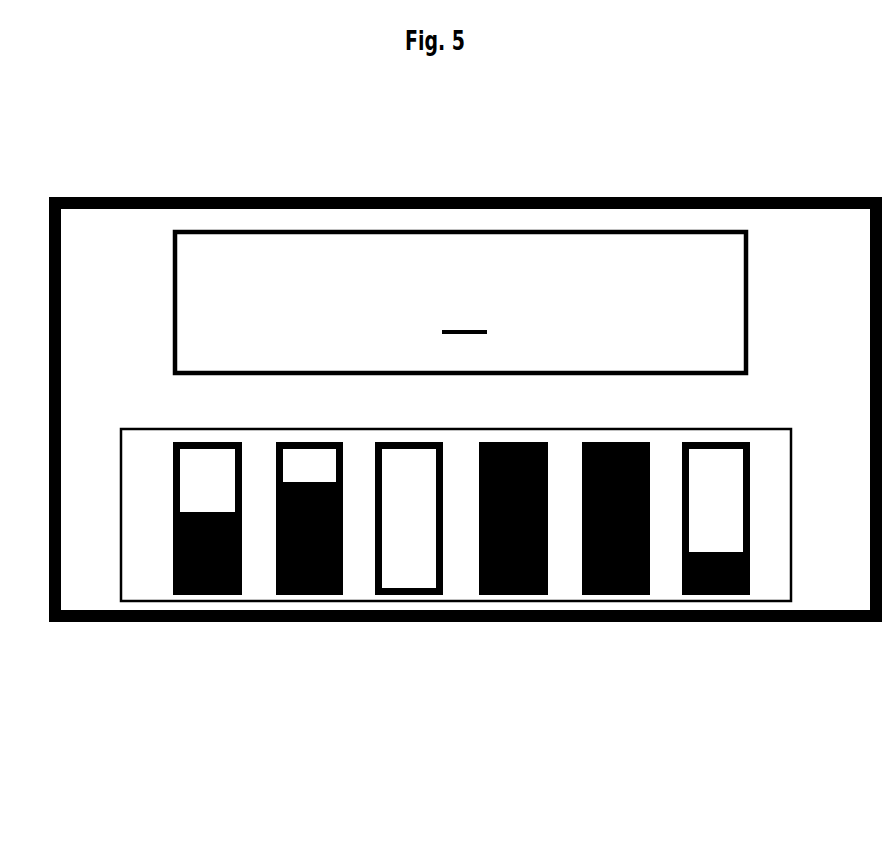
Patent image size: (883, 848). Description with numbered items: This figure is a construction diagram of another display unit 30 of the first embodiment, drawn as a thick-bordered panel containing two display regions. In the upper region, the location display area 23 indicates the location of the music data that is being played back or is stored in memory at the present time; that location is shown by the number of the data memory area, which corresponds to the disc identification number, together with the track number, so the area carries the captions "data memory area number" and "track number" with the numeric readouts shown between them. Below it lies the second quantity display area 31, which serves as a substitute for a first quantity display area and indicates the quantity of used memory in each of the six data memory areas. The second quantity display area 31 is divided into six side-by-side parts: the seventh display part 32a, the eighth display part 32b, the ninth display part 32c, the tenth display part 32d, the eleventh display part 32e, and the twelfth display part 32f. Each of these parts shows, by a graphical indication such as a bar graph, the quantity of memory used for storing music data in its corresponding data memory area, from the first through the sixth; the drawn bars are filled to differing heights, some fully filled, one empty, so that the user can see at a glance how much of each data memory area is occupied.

The display device 30 is at (708, 190).
The location display area 23 is at (423, 228).
The second quantity display area 31 is at (708, 748).
The seventh display part 32a is at (203, 595).
The eighth display part 32b is at (306, 595).
The ninth display part 32c is at (404, 595).
The tenth display part 32d is at (508, 595).
The eleventh display part 32e is at (611, 595).
The twelfth display part 32f is at (711, 595).